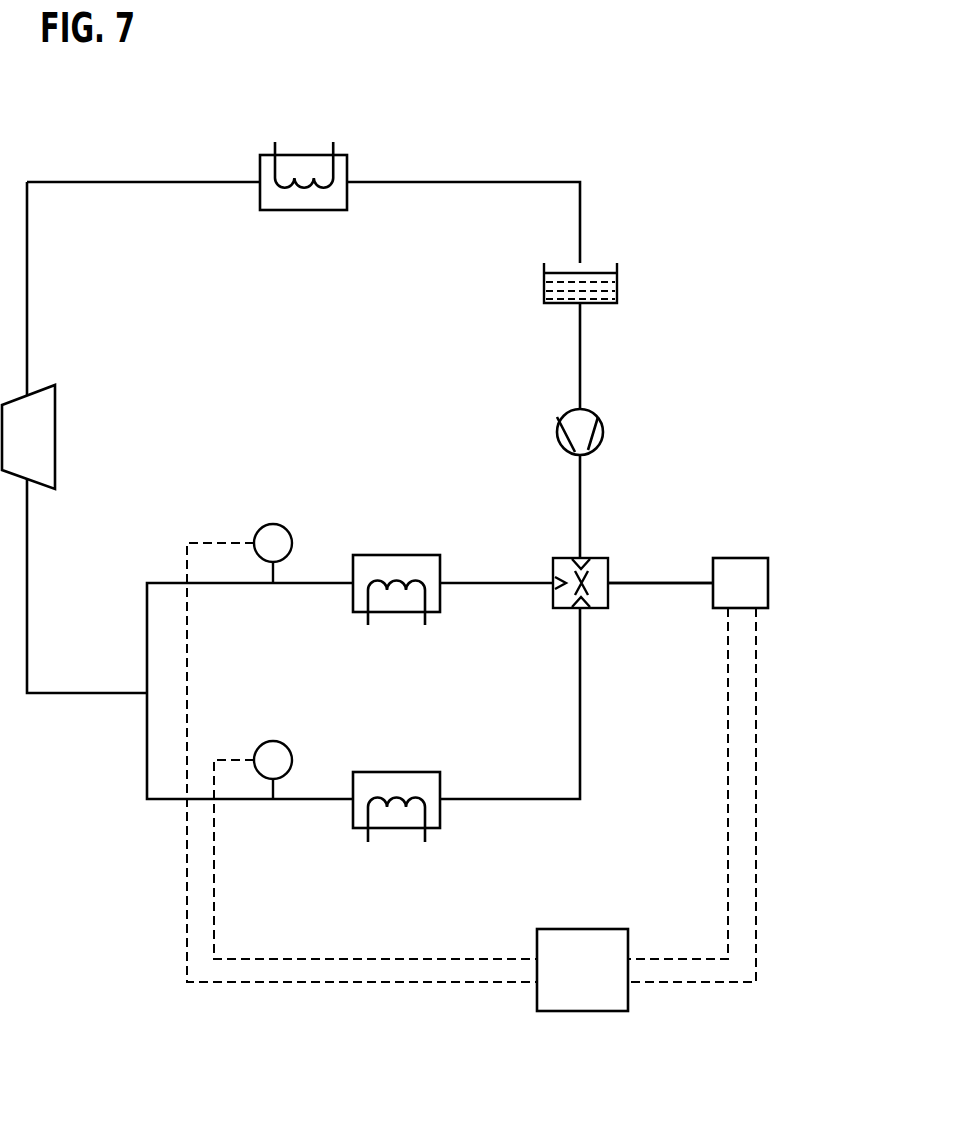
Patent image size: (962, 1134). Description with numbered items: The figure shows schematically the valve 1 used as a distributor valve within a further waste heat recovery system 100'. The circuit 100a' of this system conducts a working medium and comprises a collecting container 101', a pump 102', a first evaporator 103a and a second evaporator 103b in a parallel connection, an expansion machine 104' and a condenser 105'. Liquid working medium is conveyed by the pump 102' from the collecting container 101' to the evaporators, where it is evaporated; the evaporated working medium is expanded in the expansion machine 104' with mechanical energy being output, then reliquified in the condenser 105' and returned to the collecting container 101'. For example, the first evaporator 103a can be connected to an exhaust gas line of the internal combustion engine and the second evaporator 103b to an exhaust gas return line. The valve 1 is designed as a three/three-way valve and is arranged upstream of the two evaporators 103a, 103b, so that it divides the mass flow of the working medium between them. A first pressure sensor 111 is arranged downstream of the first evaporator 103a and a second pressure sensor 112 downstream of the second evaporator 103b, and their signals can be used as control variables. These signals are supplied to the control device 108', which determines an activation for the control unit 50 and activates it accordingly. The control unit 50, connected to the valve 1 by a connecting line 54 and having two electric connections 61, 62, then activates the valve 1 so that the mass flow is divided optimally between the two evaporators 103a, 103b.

The further waste heat recovery system 100' is at (756, 94).
The circuit 100a' is at (662, 360).
The collecting container 101' is at (620, 283).
The pump 102' is at (620, 432).
The first evaporator 103a is at (397, 598).
The second evaporator 103b is at (397, 815).
The expansion machine 104' is at (67, 437).
The condenser 105' is at (303, 151).
The control device 108' is at (582, 1004).
The valve 1 is at (553, 565).
The control unit 50 is at (741, 576).
The connecting line 54 is at (660, 582).
The electric connection 61 is at (758, 805).
The electric connection 62 is at (728, 805).
The first pressure sensor 111 is at (290, 535).
The second pressure sensor 112 is at (290, 752).